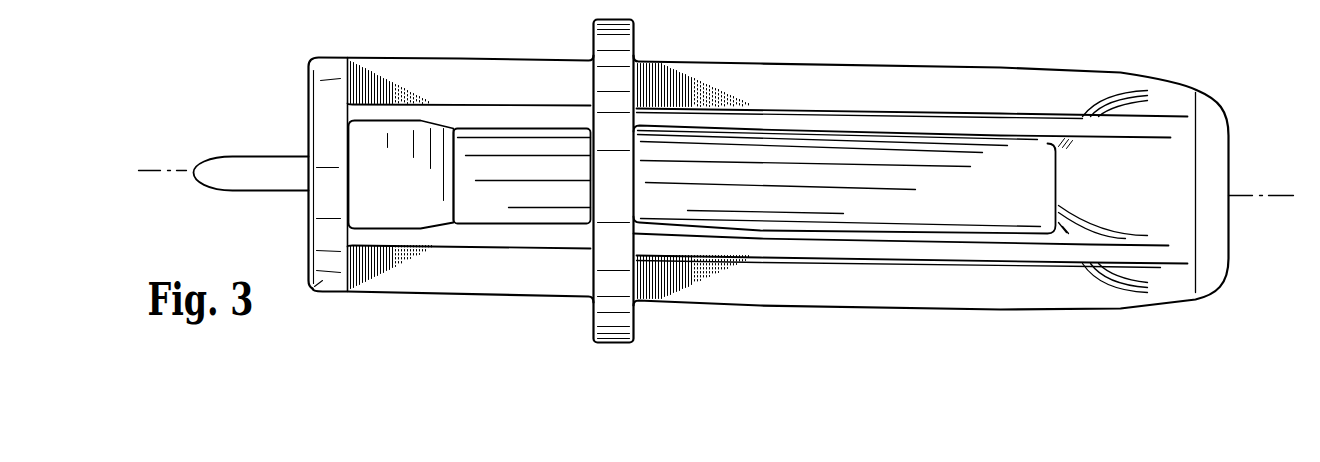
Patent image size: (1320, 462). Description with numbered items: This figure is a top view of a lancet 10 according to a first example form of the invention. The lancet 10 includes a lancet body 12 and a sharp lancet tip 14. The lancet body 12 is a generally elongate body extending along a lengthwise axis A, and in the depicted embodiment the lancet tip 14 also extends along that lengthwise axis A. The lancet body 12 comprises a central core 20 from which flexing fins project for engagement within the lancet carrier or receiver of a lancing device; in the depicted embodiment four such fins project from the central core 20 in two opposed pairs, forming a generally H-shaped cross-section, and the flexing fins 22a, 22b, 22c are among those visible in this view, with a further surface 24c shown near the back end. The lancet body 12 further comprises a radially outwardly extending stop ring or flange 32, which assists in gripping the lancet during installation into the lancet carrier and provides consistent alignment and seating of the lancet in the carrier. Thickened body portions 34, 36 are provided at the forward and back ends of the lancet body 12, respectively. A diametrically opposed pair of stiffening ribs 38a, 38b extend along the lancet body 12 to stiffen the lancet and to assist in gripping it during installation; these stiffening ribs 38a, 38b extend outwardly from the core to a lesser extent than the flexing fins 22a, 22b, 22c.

The lancet 10 is at (396, 337).
The lancet body 12 is at (1011, 78).
The lancet tip 14 is at (237, 178).
The central core 20 is at (992, 217).
The flexing fin 22a is at (752, 248).
The flexing fin 22b is at (748, 120).
The flexing fin 22c is at (989, 62).
The inner surface 24c is at (899, 63).
The stop ring 32 is at (602, 334).
The thickened body portion 34 is at (327, 278).
The thickened body portion 36 is at (1198, 282).
The stiffening rib 38a is at (875, 310).
The stiffening rib 38b is at (922, 62).
The lengthwise axis A is at (1263, 195).